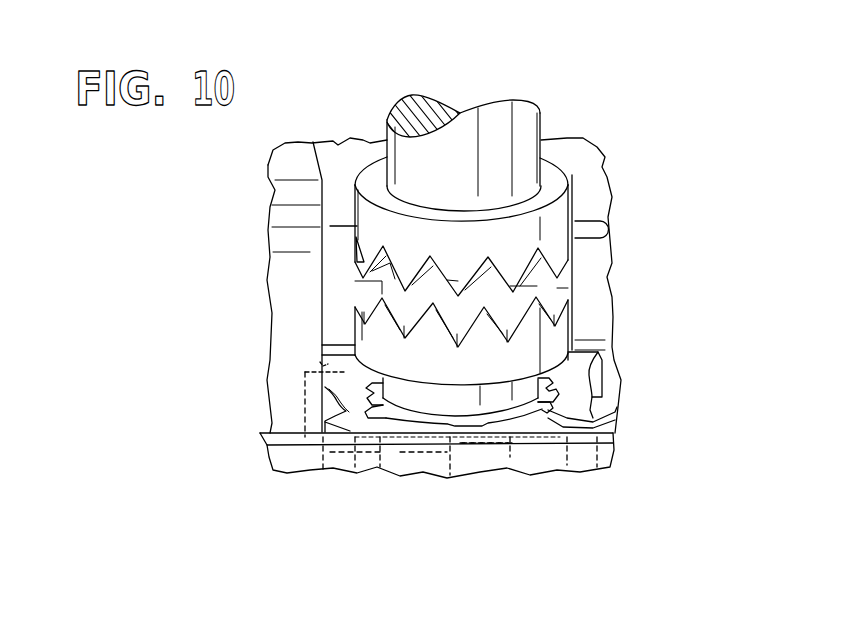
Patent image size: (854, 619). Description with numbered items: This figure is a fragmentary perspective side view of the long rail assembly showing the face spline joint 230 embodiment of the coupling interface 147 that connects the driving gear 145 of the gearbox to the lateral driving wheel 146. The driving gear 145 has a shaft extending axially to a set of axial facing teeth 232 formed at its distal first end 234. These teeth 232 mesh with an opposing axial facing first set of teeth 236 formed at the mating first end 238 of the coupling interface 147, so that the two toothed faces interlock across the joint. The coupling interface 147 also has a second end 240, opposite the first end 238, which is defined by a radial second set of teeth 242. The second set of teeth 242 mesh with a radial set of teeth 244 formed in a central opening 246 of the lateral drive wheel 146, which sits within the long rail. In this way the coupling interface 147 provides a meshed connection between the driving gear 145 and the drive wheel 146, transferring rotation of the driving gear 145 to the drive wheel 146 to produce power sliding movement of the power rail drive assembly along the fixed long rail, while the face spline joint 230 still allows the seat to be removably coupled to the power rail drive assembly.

The driving gear 145 is at (530, 128).
The lateral driving wheel 146 is at (613, 386).
The coupling interface 147 is at (328, 288).
The face spline joint 230 is at (600, 295).
The axial facing teeth 232 is at (550, 264).
The distal first end 234 is at (348, 229).
The first set of teeth 236 is at (537, 318).
The mating first end 238 is at (332, 310).
The second end 240 is at (343, 385).
The second set of teeth 242 is at (374, 378).
The radial set of teeth 244 is at (388, 410).
The central opening 246 is at (505, 433).